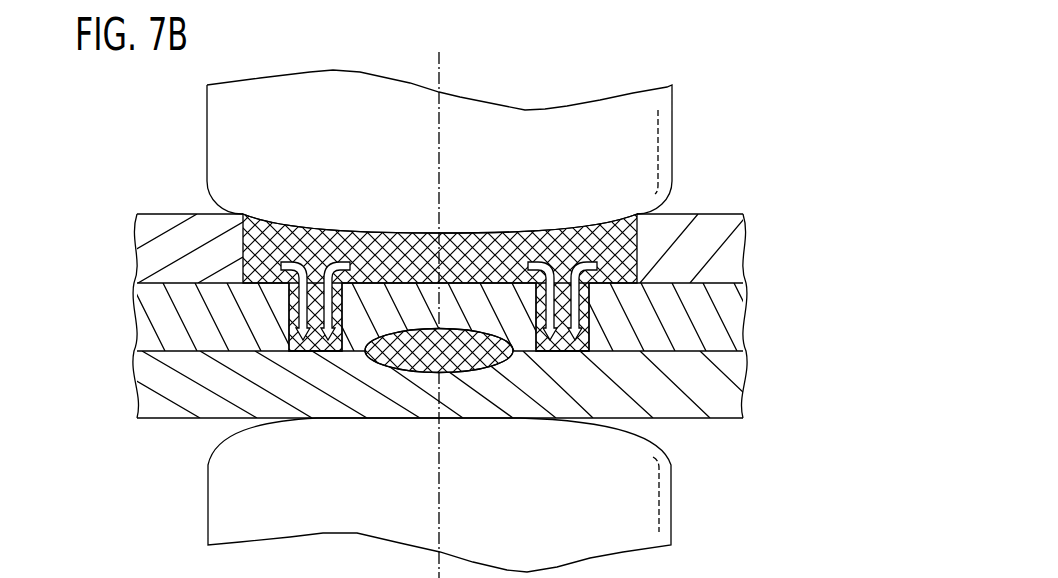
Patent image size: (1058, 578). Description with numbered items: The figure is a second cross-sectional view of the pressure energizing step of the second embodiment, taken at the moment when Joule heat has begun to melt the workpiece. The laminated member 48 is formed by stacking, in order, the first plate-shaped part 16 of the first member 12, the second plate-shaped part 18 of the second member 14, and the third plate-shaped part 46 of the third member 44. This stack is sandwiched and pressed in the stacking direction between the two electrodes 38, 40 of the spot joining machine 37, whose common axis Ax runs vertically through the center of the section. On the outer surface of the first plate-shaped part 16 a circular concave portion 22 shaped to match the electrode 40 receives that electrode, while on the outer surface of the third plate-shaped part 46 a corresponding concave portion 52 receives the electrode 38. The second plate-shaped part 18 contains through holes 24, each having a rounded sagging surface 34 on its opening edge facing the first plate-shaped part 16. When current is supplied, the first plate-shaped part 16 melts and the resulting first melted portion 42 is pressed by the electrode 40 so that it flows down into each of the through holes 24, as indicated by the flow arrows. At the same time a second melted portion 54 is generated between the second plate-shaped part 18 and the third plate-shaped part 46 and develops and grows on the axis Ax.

The first member 12 is at (431, 316).
The second member 14 is at (431, 379).
The first plate-shaped part 16 is at (738, 247).
The second plate-shaped part 18 is at (458, 379).
The concave portion 22 is at (408, 232).
The through holes 24 is at (585, 343).
The sagging surface 34 is at (574, 325).
The spot joining machine 37 is at (470, 126).
The electrode 38 is at (663, 504).
The electrode 40 is at (665, 125).
The first melted portion 42 is at (487, 252).
The third member 44 is at (431, 408).
The third plate-shaped part 46 is at (435, 408).
The laminated member 48 is at (449, 344).
The concave portion 52 is at (485, 418).
The second melted portion 54 is at (418, 348).
The axis Ax is at (439, 303).